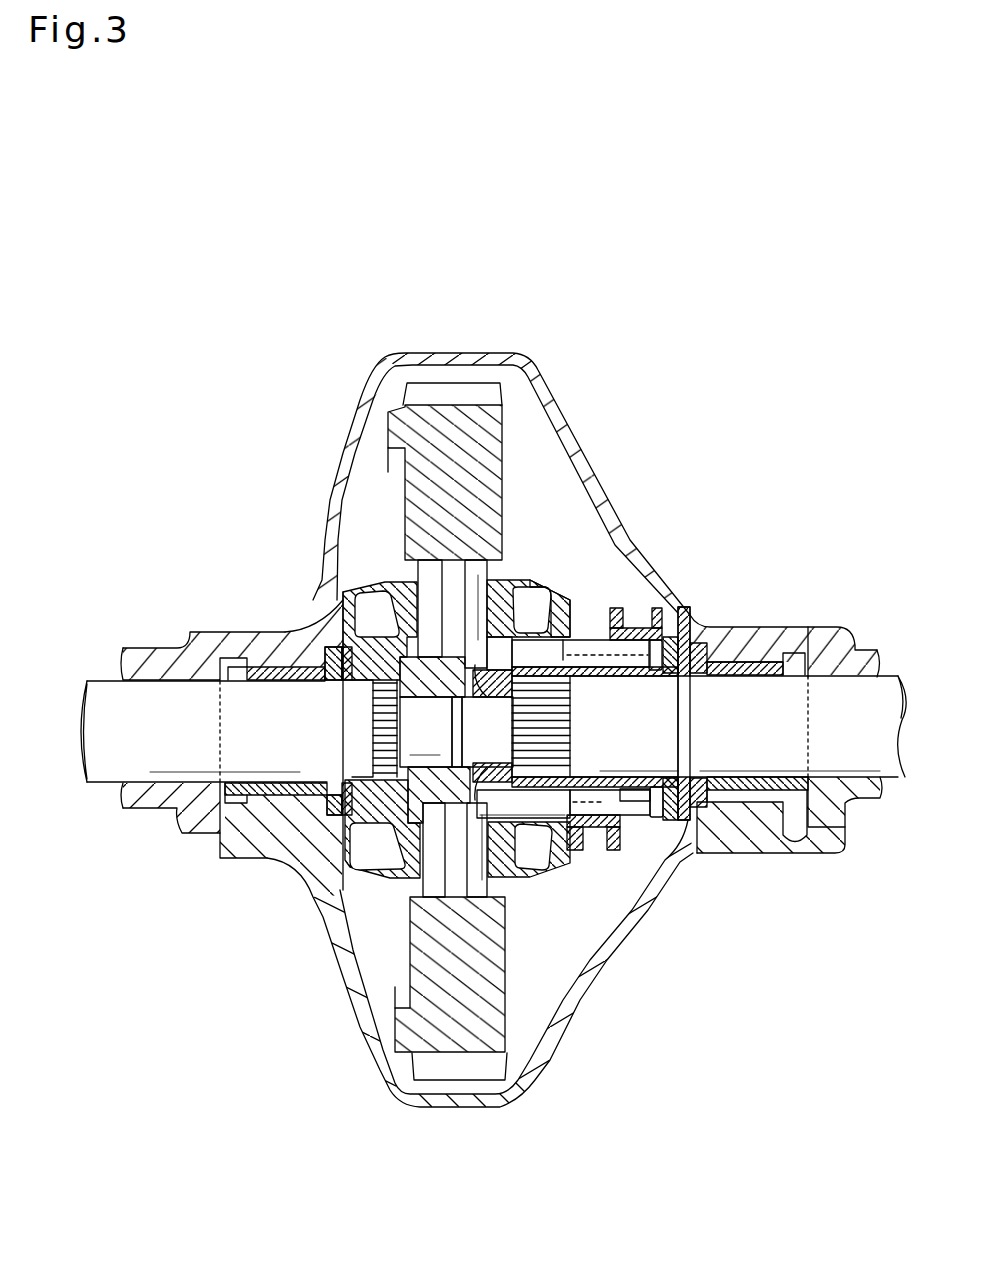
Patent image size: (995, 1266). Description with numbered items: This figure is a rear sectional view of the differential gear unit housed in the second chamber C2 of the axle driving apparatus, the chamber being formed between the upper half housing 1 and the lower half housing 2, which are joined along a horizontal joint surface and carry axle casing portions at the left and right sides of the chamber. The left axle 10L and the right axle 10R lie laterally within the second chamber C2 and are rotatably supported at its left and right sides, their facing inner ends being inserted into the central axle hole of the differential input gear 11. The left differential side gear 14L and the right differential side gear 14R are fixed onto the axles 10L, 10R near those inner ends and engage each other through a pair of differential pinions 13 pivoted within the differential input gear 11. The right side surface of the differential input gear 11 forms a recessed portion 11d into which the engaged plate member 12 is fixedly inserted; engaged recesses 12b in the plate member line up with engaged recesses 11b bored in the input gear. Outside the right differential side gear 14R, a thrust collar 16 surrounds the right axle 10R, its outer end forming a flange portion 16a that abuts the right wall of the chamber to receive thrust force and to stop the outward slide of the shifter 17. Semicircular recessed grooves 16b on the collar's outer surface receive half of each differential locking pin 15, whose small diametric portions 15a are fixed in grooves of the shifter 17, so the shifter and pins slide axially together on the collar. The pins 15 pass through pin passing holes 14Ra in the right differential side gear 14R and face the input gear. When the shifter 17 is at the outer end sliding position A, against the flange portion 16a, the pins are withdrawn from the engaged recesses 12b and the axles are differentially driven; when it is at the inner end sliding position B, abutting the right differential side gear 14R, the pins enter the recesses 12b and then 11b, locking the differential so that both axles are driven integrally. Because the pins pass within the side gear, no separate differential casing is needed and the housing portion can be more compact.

The upper half housing 1 is at (823, 627).
The lower half housing 2 is at (797, 857).
The left axle 10L is at (259, 752).
The right axle 10R is at (744, 746).
The differential input gear 11 is at (521, 957).
The engaged recesses 11b is at (473, 763).
The recessed portion 11d is at (413, 575).
The engaged plate member 12 is at (563, 724).
The engaged recesses 12b is at (487, 732).
The differential pinions 13 is at (512, 588).
The left differential side gear 14L is at (350, 872).
The right differential side gear 14R is at (558, 594).
The pin passing holes 14Ra is at (562, 703).
The differential locking pins 15 is at (586, 640).
The small diametric portions 15a is at (600, 842).
The thrust collar 16 is at (628, 678).
The flange portion 16a is at (676, 620).
The recessed grooves 16b is at (636, 801).
The shifter 17 is at (617, 607).
The outer end sliding position A is at (642, 605).
The inner end sliding position B is at (603, 860).
The second chamber C2 is at (534, 490).